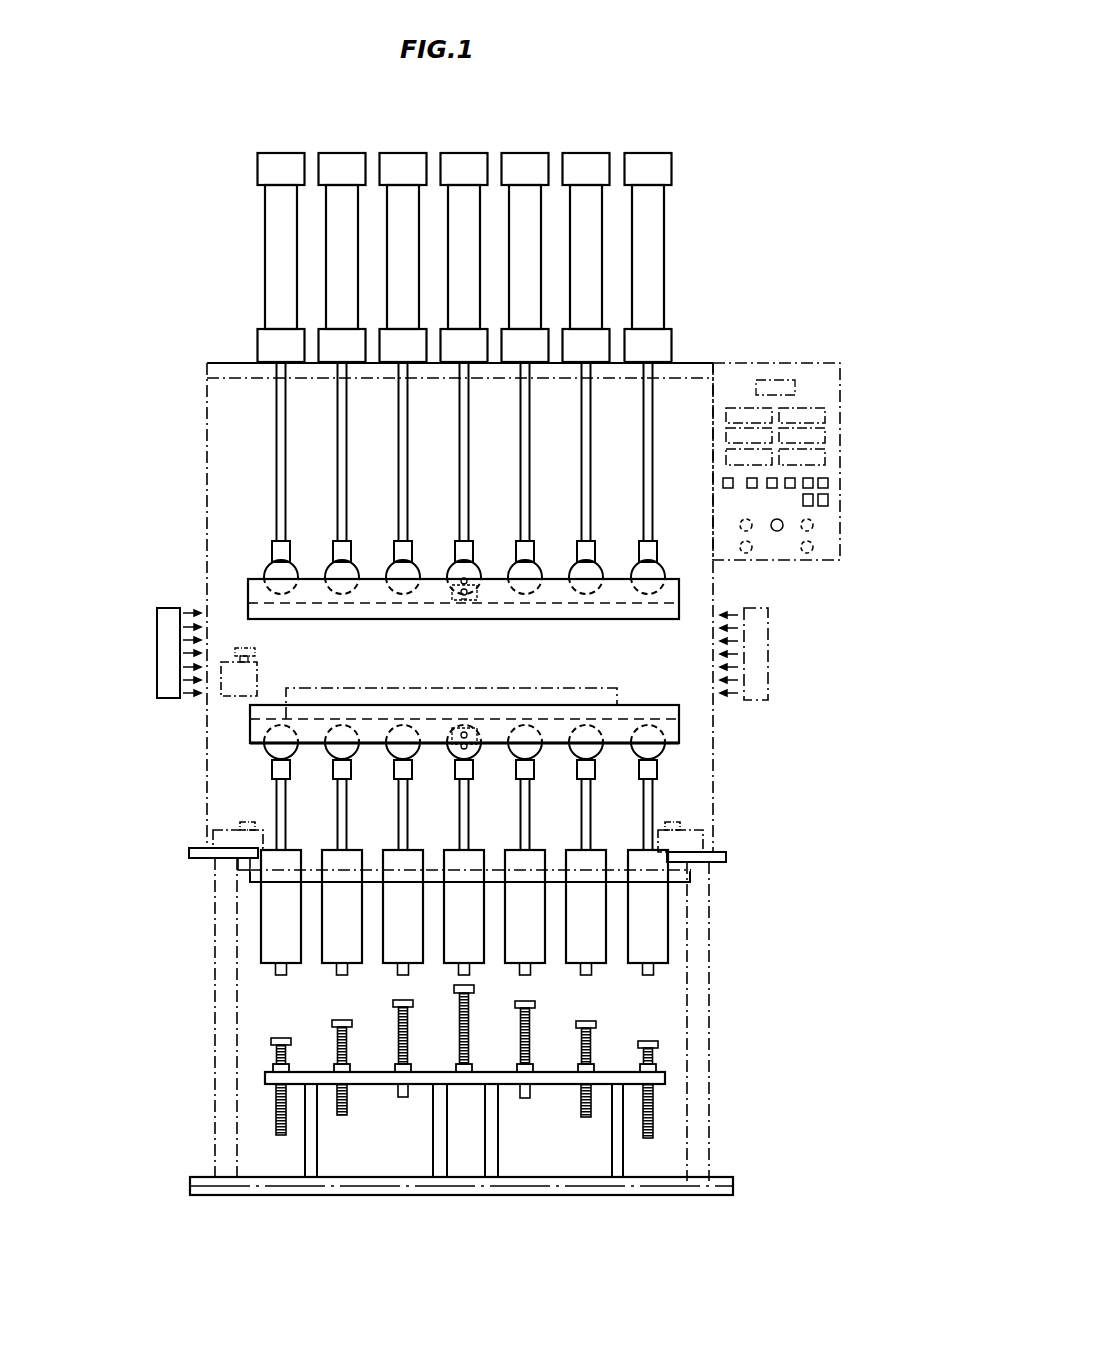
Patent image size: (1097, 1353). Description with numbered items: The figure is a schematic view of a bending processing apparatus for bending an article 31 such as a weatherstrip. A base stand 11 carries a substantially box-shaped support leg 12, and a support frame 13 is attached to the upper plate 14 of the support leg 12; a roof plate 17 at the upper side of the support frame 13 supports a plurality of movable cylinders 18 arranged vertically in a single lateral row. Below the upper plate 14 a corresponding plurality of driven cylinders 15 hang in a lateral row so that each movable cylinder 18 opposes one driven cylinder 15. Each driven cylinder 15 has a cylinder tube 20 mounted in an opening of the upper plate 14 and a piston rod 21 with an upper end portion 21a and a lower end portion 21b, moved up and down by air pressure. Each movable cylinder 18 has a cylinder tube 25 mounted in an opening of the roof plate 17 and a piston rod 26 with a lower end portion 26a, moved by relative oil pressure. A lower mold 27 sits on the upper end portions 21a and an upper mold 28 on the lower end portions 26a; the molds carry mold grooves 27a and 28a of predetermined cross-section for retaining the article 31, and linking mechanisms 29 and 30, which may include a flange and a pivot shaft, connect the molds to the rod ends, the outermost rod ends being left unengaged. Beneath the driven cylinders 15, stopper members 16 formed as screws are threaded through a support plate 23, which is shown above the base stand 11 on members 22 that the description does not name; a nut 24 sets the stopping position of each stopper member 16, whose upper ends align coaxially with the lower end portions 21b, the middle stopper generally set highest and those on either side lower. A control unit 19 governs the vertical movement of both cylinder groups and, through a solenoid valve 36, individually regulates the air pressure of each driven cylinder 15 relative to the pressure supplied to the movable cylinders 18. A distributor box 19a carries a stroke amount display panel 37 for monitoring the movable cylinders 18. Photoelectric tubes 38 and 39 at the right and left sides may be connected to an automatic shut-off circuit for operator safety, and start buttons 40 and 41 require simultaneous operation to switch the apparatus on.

The base stand 11 is at (735, 1190).
The support leg 12 is at (215, 998).
The frame upright 13 is at (716, 712).
The upper plate 14 is at (715, 868).
The driven cylinders 15 is at (460, 909).
The stopper members 16 is at (458, 1078).
The roof plate 17 is at (690, 368).
The movable cylinders 18 is at (468, 257).
The control unit 19 is at (822, 436).
The distributor box 19a is at (840, 530).
The cylinder tube 20 is at (262, 938).
The piston rod 21 is at (276, 805).
The upper end portion 21a is at (273, 770).
The lower end portion 21b is at (280, 976).
The support posts 22 is at (614, 1143).
The support plate 23 is at (666, 1078).
The nut 24 is at (270, 1068).
The cylinder tube 25 is at (278, 279).
The piston rod 26 is at (276, 468).
The end portion 26a is at (273, 552).
The lower mold 27 is at (516, 499).
The mold groove 27a is at (445, 712).
The upper mold 28 is at (527, 615).
The mold groove 28a is at (380, 606).
The linking mechanism 29 is at (478, 752).
The linking mechanism 30 is at (472, 570).
The article 31 is at (572, 690).
The solenoid valve 36 is at (234, 690).
The stroke amount display panel 37 is at (808, 385).
The photoelectric tube 38 is at (768, 668).
The photoelectric tube 39 is at (165, 643).
The start button 40 is at (695, 841).
The start button 41 is at (225, 840).